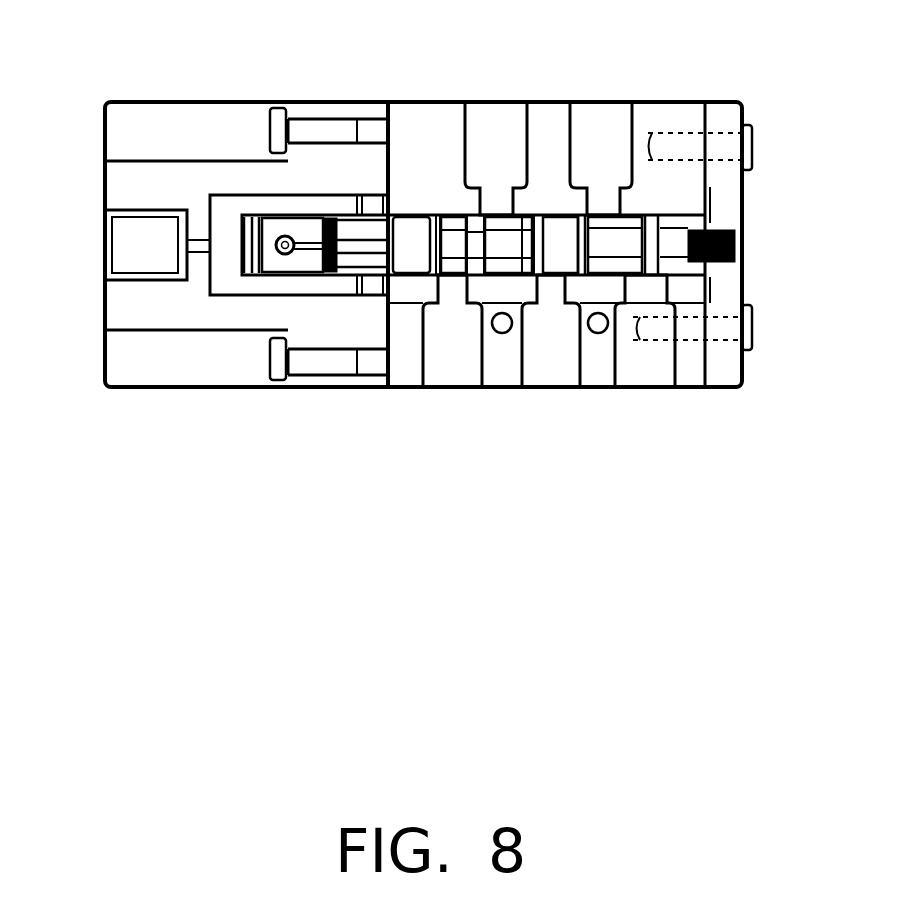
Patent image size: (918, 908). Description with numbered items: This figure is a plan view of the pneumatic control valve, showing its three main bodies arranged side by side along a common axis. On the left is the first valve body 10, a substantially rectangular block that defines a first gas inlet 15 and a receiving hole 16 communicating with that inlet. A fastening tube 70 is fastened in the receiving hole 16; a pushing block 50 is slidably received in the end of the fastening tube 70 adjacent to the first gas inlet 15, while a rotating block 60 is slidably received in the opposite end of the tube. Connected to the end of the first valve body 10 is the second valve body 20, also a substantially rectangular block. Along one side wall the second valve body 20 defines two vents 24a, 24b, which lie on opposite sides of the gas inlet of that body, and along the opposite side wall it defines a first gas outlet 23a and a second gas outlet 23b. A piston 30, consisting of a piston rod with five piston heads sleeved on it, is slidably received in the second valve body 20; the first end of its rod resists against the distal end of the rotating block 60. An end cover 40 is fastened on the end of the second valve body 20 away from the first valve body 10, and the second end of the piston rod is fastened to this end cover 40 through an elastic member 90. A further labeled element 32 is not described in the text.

The first valve body 10 is at (303, 320).
The first gas inlet 15 is at (125, 243).
The receiving hole 16 is at (370, 287).
The second valve body 20 is at (688, 297).
The first gas outlet 23a is at (512, 132).
The second gas outlet 23b is at (583, 133).
The vent 24a is at (450, 355).
The vent 24b is at (632, 385).
The piston 30 is at (452, 223).
The pressure port P 32 is at (530, 350).
The end cover 40 is at (723, 180).
The pushing block 50 is at (303, 230).
The rotating block 60 is at (370, 222).
The fastening tube 70 is at (237, 207).
The elastic member 90 is at (740, 227).